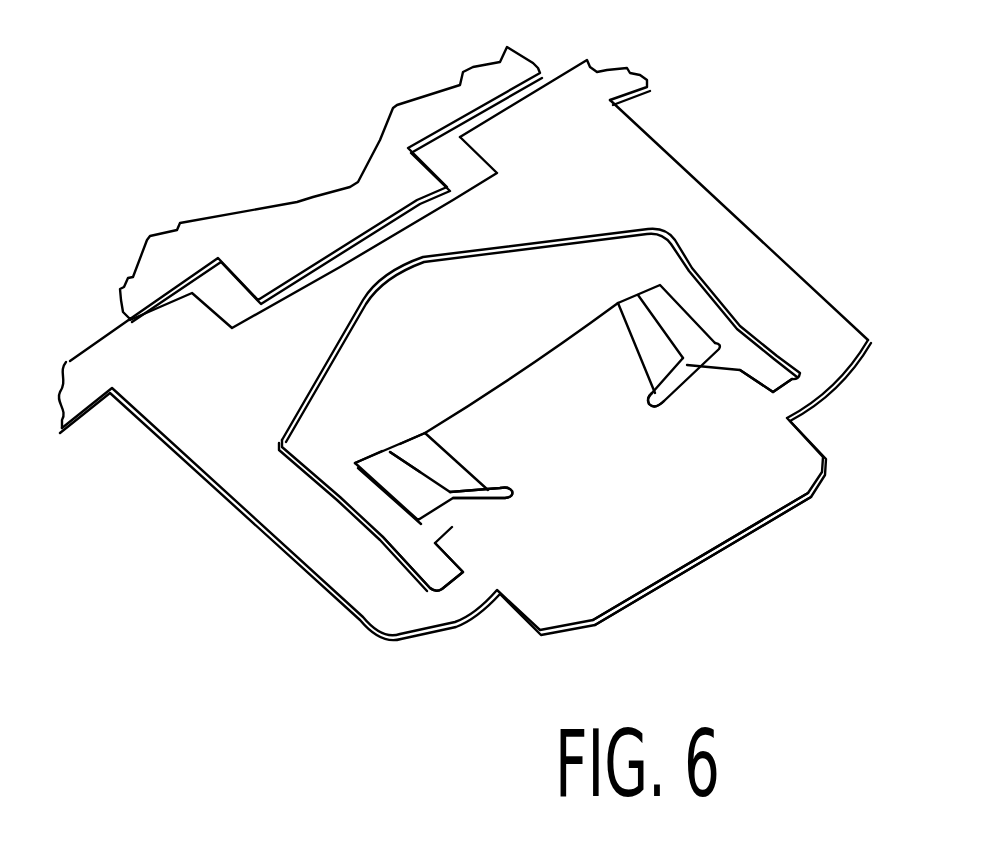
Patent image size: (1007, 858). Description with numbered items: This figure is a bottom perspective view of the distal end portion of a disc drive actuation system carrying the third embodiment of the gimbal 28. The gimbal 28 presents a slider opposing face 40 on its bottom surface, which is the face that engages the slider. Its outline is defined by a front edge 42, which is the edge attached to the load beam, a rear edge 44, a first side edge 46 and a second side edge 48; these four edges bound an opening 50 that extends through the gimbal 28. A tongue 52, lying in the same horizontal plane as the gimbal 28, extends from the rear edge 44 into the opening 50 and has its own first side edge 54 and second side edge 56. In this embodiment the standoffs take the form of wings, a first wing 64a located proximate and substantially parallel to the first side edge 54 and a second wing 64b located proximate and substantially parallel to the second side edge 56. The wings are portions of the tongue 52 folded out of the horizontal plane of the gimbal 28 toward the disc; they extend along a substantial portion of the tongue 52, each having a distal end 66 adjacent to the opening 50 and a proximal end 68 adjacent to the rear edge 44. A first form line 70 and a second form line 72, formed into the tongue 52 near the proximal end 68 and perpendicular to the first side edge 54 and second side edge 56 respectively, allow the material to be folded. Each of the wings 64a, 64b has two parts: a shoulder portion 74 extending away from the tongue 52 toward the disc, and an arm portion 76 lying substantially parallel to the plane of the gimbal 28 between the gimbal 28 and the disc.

The gimbal 28 is at (761, 175).
The slider opposing face 40 is at (703, 493).
The front edge 42 is at (361, 251).
The rear edge 44 is at (645, 590).
The first side edge 46 is at (770, 245).
The second side edge 48 is at (200, 478).
The opening 50 is at (305, 400).
The tongue 52 is at (577, 420).
The first side edge 54 is at (690, 312).
The second side edge 56 is at (400, 488).
The first wing 64a is at (681, 334).
The second wing 64b is at (420, 483).
The distal end 66 is at (356, 462).
The proximal end 68 is at (460, 530).
The first form line 70 is at (673, 396).
The second form line 72 is at (472, 505).
The shoulder portion 74 is at (418, 436).
The arm portion 76 is at (390, 450).